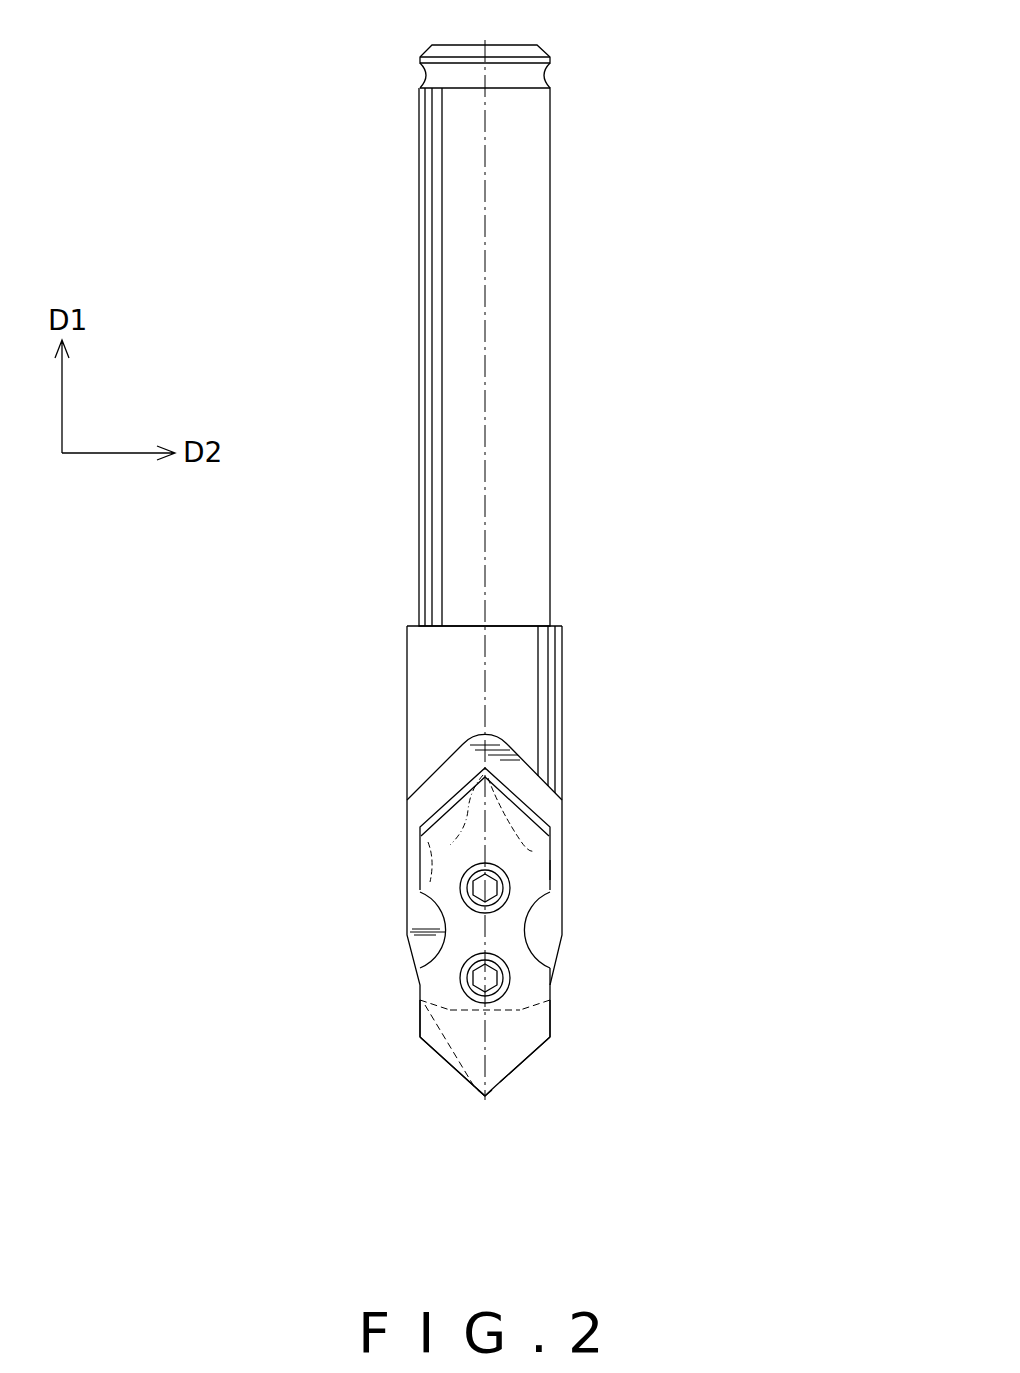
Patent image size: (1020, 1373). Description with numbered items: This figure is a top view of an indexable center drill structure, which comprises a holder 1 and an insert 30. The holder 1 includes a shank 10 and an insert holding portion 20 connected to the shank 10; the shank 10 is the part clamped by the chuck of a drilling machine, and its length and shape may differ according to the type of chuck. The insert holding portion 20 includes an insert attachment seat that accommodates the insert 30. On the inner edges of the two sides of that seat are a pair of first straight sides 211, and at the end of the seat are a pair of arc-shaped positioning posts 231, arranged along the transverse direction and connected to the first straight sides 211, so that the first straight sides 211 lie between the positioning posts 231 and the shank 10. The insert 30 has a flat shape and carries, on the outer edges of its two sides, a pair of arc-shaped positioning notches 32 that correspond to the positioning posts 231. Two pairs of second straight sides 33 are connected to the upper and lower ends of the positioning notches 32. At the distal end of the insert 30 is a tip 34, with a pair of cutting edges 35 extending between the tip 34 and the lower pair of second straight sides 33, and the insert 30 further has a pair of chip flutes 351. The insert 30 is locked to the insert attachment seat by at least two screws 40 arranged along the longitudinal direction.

The holder 1 is at (586, 232).
The shank 10 is at (448, 425).
The insert holding portion 20 is at (407, 900).
The first straight sides 211 is at (420, 832).
The positioning posts 231 is at (540, 935).
The insert 30 is at (478, 838).
The positioning notches 32 is at (557, 948).
The second straight sides 33 is at (548, 872).
The tip 34 is at (480, 1097).
The cutting edges 35 is at (440, 1058).
The chip flutes 351 is at (522, 1050).
The screws 40 is at (497, 878).